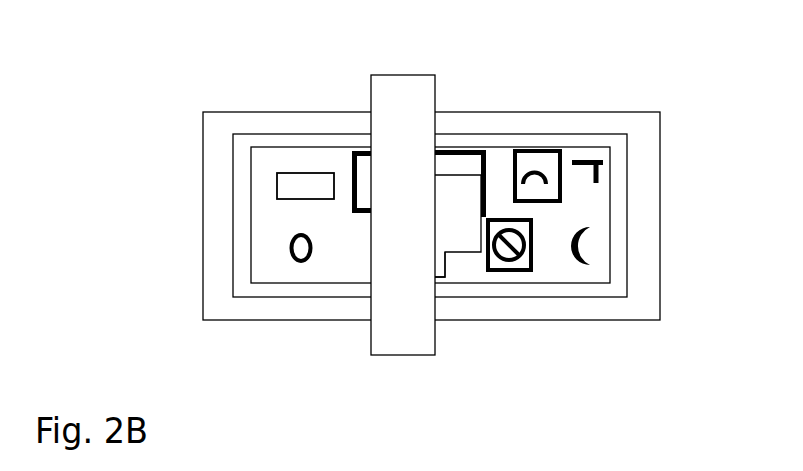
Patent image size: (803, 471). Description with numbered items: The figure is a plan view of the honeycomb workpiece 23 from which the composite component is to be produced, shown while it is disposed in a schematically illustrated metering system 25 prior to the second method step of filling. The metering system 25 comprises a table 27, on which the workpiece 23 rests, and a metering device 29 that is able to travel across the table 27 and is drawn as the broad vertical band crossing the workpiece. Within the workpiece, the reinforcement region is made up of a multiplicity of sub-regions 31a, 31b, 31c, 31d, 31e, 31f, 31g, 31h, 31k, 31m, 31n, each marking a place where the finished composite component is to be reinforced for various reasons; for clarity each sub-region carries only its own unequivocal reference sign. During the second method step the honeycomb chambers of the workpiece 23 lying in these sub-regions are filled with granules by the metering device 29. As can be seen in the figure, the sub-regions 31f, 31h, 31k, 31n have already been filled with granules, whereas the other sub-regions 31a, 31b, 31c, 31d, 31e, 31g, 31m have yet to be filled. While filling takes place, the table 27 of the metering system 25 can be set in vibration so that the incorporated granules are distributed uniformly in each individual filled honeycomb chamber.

The workpiece 23 is at (224, 142).
The metering system 25 is at (592, 97).
The table 27 is at (645, 177).
The metering device 29 is at (465, 243).
The sub-region of the reinforcement region 31a is at (305, 172).
The sub-region of the reinforcement region 31b is at (291, 264).
The sub-region of the reinforcement region 31c is at (362, 150).
The sub-region of the reinforcement region 31d is at (470, 148).
The sub-region of the reinforcement region 31e is at (532, 168).
The sub-region of the reinforcement region 31f is at (564, 152).
The sub-region of the reinforcement region 31g is at (603, 162).
The sub-region of the reinforcement region 31h is at (580, 244).
The sub-region of the reinforcement region 31k is at (510, 272).
The sub-region of the reinforcement region 31m is at (533, 260).
The sub-region of the reinforcement region 31n is at (435, 282).